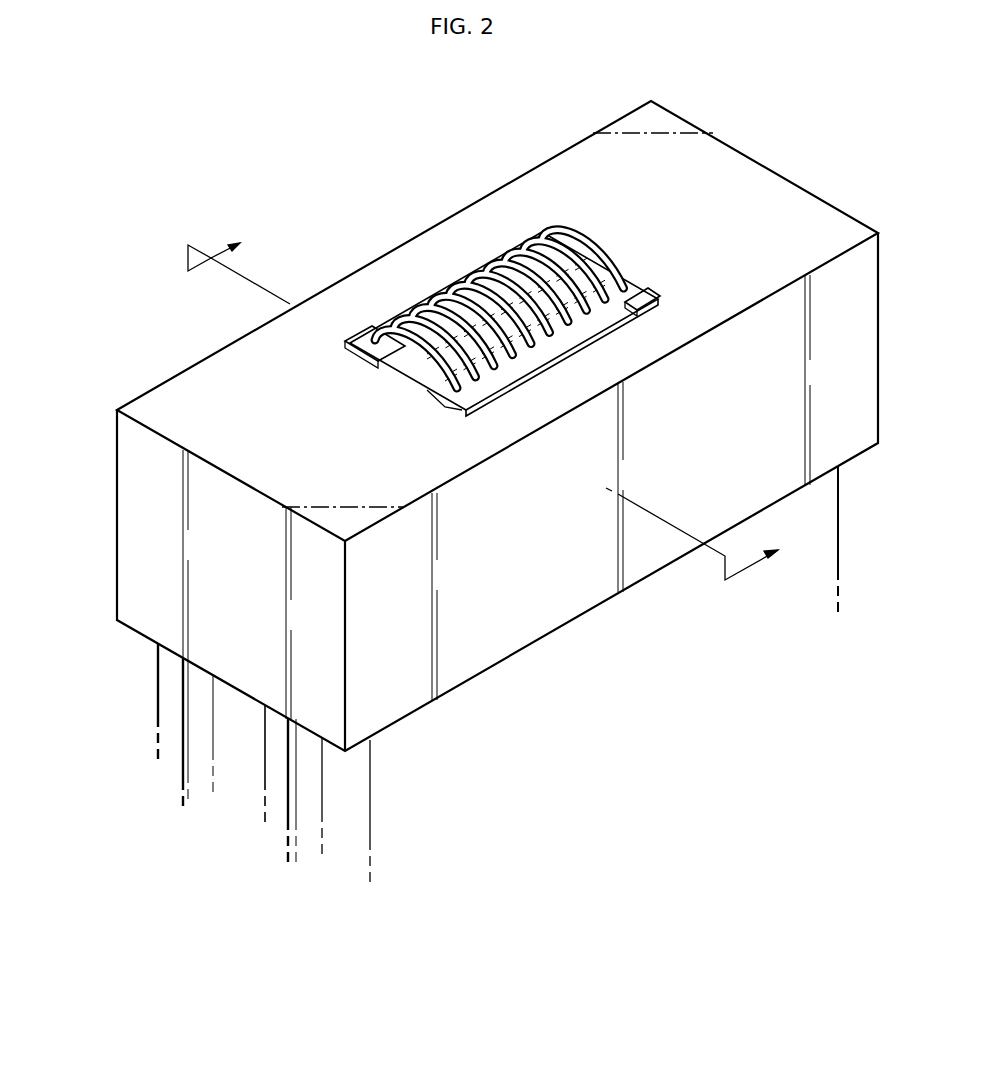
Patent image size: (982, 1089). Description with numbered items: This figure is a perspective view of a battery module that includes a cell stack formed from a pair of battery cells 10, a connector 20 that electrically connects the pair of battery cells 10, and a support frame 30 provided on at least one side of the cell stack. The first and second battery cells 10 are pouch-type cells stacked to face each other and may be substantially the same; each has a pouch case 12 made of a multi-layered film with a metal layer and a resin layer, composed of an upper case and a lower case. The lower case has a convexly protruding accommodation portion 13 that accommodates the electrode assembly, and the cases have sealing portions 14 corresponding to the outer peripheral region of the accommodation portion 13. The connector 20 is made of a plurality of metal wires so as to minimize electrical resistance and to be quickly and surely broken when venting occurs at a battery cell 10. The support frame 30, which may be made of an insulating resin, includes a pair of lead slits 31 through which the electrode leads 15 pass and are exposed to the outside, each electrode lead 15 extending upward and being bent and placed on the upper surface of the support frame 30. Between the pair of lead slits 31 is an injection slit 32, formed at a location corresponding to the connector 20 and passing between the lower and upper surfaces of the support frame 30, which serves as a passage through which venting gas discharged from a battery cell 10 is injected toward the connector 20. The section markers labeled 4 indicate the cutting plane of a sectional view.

The battery cell 10 is at (274, 882).
The pouch case 12 is at (92, 658).
The accommodation portion 13 is at (156, 668).
The sealing portion 14 is at (197, 716).
The electrode lead 15 is at (363, 340).
The connector 20 is at (578, 240).
The support frame 30 is at (722, 165).
The lead slit 31 is at (635, 300).
The injection slit 32 is at (410, 379).
The section line 4- 4 is at (500, 400).